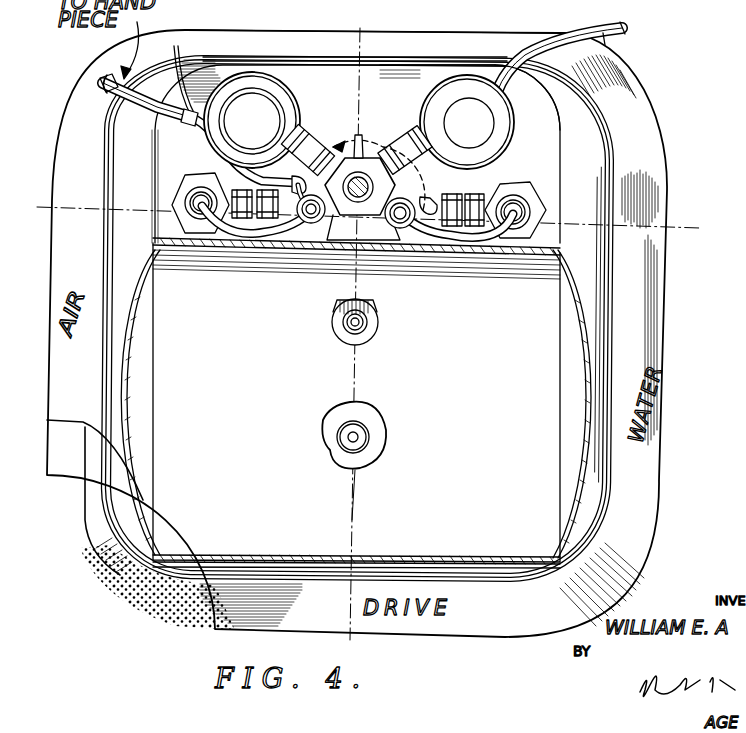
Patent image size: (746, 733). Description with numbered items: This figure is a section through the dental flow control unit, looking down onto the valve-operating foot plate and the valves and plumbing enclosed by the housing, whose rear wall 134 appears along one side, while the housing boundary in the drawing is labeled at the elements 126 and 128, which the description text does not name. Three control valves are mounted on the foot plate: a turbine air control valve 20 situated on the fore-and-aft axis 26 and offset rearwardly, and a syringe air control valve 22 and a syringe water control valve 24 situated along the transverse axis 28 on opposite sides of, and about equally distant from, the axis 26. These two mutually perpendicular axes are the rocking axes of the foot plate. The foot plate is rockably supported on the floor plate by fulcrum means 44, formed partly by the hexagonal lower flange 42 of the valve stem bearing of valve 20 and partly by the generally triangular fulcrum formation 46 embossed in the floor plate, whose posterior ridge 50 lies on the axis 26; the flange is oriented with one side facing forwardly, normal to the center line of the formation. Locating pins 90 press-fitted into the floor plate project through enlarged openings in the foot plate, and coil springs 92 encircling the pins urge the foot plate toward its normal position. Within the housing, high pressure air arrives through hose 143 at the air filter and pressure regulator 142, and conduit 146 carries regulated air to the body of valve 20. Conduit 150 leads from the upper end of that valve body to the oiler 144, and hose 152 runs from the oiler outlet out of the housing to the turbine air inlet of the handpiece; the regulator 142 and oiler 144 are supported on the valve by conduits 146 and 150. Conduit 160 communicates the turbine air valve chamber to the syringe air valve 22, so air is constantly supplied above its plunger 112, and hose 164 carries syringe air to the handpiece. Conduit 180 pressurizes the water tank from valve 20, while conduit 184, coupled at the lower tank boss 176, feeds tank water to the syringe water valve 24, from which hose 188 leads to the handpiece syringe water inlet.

The turbine air control valve 20 is at (367, 163).
The syringe air control valve 22 is at (193, 237).
The syringe water control valve 24 is at (520, 183).
The fore-and-aft axis 26 is at (357, 505).
The transverse axis 28 is at (680, 228).
The lower flange 42 is at (462, 32).
The fulcrum means 44 is at (540, 33).
The fulcrum formation 46 is at (340, 250).
The posterior ridge 50 is at (361, 134).
The locating pins 90 is at (338, 437).
The coil springs 92 is at (370, 432).
The plunger 112 is at (355, 28).
The housing top edge 126 is at (665, 25).
The rim line 128 is at (355, 30).
The rear wall 134 is at (430, 56).
The air filter and pressure regulator 142 is at (468, 90).
The hose 143 is at (604, 40).
The oiler 144 is at (270, 113).
The conduit 146 is at (403, 142).
The conduit 150 is at (303, 140).
The hose 152 is at (196, 68).
The conduit 160 is at (290, 250).
The hose 164 is at (100, 84).
The lower tank boss 176 is at (365, 330).
The conduit 180 is at (400, 250).
The conduit 184 is at (363, 250).
The hose 188 is at (110, 77).